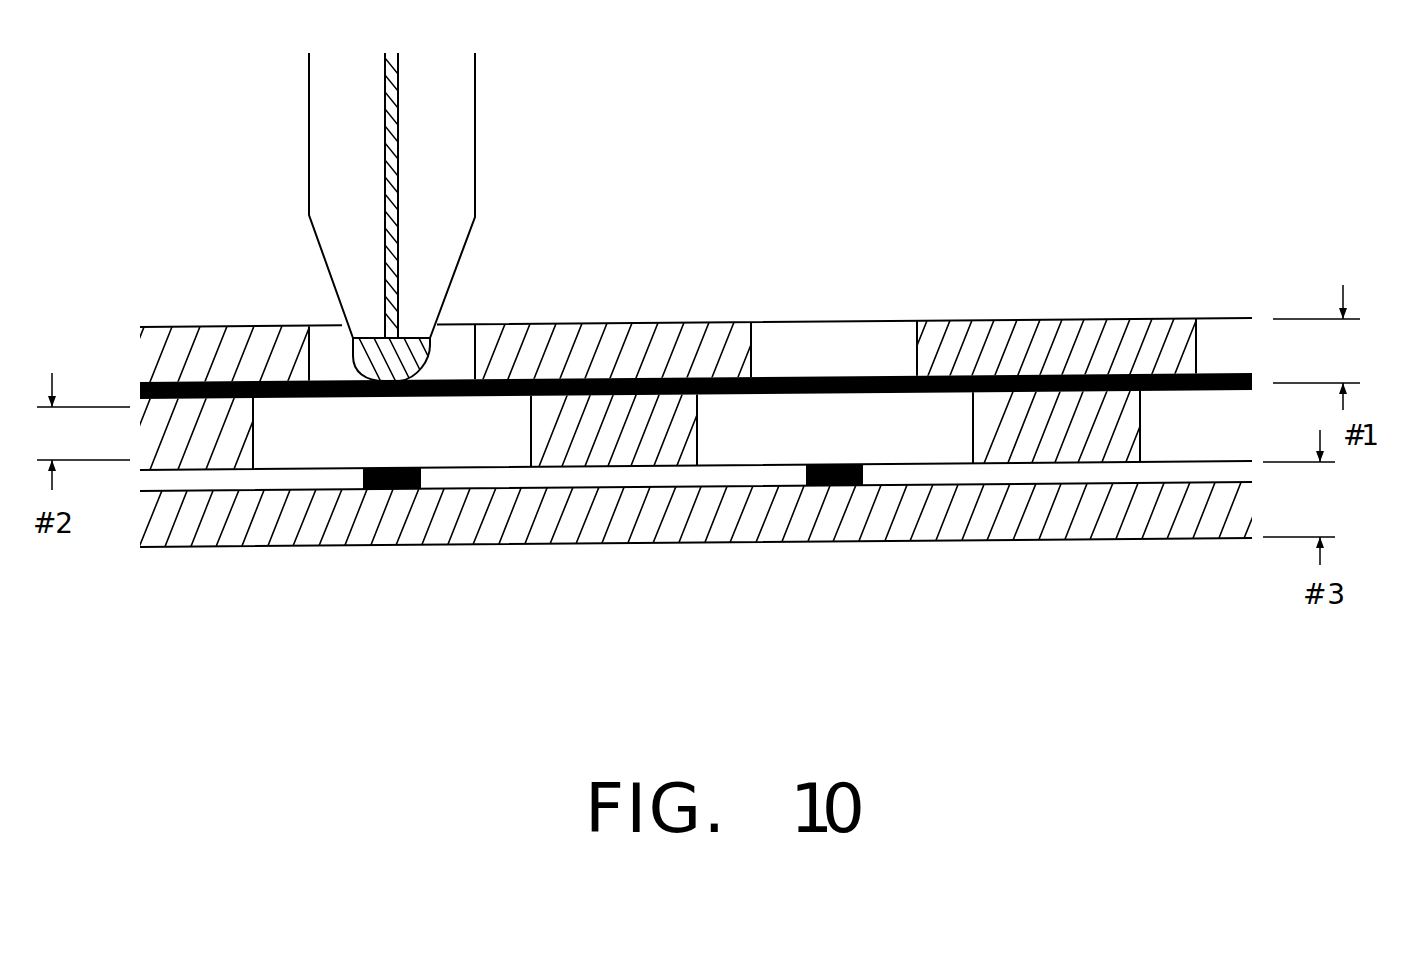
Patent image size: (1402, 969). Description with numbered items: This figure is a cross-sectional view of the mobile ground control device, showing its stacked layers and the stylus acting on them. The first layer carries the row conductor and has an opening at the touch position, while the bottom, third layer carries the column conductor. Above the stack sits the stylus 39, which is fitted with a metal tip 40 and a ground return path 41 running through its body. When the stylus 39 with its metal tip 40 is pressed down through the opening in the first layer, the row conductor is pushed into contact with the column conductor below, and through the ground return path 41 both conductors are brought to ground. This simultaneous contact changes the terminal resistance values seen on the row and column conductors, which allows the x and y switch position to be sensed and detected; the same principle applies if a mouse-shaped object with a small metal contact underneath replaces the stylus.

The stylus 39 is at (309, 136).
The metal tip 40 is at (440, 337).
The ground return path 41 is at (398, 122).